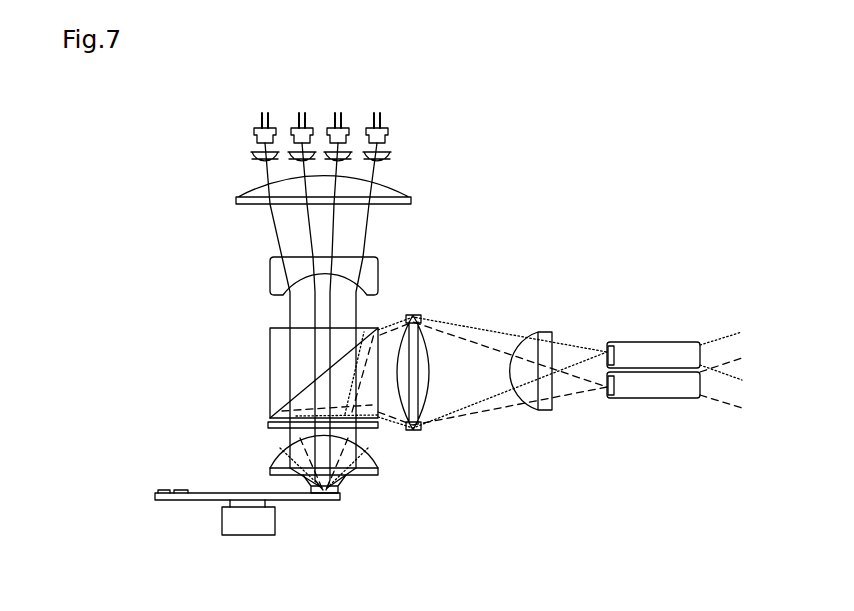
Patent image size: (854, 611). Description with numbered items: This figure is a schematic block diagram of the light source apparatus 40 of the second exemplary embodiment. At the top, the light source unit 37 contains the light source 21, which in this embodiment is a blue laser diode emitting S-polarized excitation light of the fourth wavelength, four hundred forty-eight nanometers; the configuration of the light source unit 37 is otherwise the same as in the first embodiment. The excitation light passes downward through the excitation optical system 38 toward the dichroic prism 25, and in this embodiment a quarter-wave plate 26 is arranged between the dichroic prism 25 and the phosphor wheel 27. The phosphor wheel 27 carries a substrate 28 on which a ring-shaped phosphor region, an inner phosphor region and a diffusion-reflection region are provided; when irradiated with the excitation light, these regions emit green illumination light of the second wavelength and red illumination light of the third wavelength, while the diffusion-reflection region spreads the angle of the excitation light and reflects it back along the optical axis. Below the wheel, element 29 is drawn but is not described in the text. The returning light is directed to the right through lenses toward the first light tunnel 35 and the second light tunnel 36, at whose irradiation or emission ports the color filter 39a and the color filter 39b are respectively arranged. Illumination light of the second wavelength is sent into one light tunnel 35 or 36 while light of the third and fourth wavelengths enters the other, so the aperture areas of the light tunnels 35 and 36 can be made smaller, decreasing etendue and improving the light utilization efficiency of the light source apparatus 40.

The light source 21 is at (386, 135).
The dichroic prism 25 is at (272, 338).
The quarter-wave plate 26 is at (268, 427).
The phosphor wheel 27 is at (191, 507).
The substrate 28 is at (340, 498).
The stage 29 is at (258, 537).
The first light tunnel 35 is at (665, 342).
The second light tunnel 36 is at (668, 398).
The light source unit 37 is at (417, 132).
The excitation optical system 38 is at (217, 295).
The color filter 39a is at (613, 350).
The color filter 39b is at (614, 393).
The light source apparatus 40 is at (488, 126).